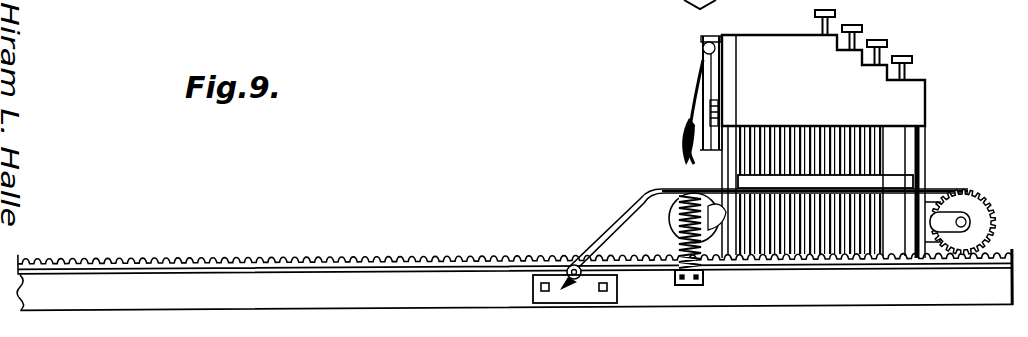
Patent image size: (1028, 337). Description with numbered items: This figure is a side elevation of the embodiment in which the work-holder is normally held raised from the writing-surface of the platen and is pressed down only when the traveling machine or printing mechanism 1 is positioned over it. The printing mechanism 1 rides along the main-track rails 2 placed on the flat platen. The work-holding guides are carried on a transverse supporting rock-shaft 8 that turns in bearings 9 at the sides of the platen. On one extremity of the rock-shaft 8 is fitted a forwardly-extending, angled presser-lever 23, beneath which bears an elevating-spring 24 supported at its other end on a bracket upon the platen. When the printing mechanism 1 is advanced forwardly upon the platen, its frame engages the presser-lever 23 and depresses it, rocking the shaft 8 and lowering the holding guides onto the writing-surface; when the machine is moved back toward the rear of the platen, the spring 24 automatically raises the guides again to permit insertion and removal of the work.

The traveling machine or printing mechanism 1 is at (801, 134).
The main-track rails 2 is at (290, 252).
The supporting rock-shaft 8 is at (576, 262).
The bearings 9 is at (534, 279).
The presser-lever 23 is at (931, 190).
The elevating-spring 24 is at (676, 244).